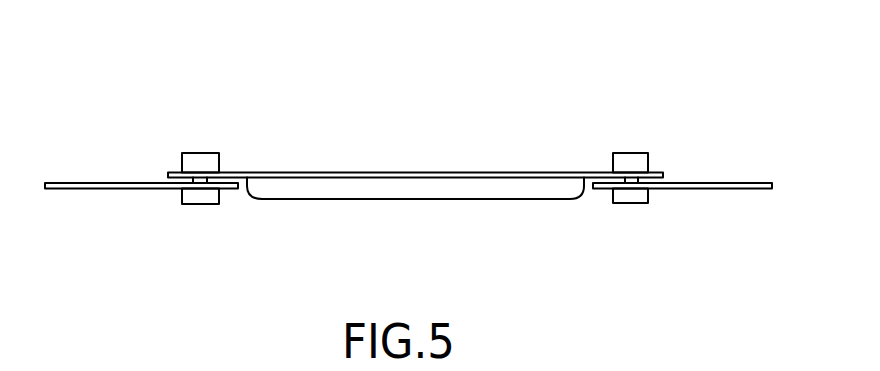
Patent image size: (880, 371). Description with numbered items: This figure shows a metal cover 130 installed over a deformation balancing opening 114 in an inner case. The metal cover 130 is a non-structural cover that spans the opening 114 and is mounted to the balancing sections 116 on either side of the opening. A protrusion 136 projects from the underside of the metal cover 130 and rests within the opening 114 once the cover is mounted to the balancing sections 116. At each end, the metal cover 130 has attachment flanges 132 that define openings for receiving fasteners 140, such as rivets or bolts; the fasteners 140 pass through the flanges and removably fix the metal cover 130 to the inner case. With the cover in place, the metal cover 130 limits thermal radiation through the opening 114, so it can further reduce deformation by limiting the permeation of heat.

The opening 114 is at (600, 189).
The balancing sections 116 is at (80, 183).
The metal cover 130 is at (307, 172).
The attachment flanges 132 is at (174, 172).
The protrusion 136 is at (492, 201).
The fasteners 140 is at (636, 153).